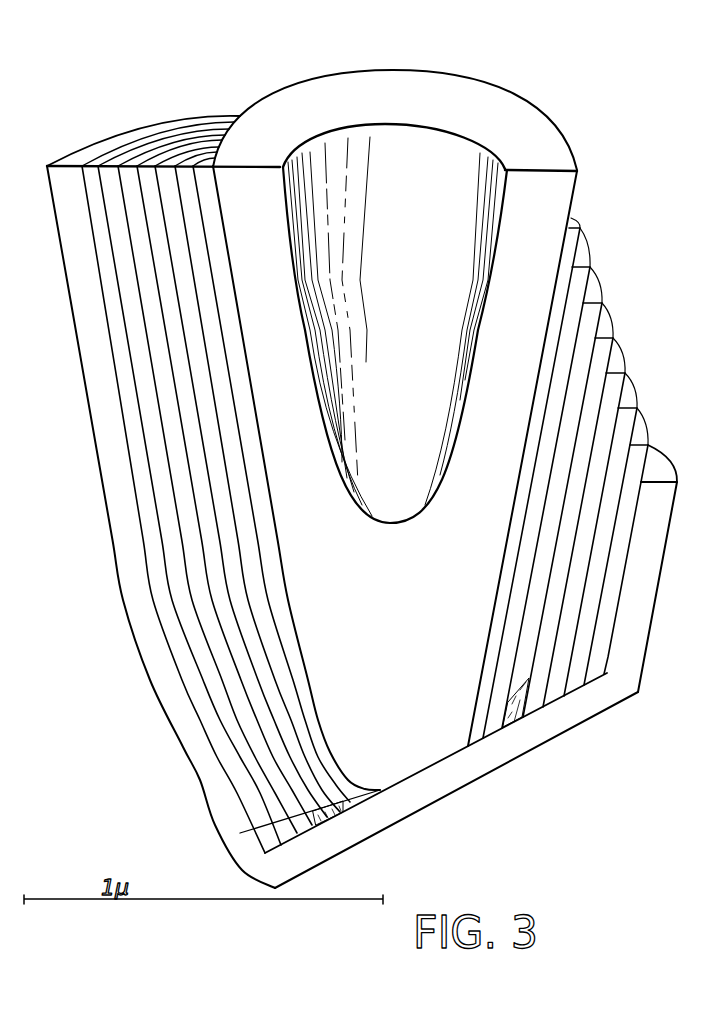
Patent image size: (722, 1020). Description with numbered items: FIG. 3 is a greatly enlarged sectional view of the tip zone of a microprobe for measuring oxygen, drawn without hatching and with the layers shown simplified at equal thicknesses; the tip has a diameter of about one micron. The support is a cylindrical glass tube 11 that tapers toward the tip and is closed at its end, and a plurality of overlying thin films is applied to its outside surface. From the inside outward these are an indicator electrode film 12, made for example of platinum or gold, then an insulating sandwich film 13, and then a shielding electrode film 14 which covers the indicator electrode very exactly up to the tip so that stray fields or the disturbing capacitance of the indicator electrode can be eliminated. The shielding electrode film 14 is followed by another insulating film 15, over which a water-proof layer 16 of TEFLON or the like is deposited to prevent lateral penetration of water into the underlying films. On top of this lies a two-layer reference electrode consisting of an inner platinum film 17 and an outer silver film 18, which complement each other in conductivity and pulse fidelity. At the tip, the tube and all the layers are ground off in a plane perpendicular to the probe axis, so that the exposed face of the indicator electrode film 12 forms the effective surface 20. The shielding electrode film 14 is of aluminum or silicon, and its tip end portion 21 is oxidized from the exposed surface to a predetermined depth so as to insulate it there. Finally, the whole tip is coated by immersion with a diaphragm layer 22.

The glass tube 11 is at (262, 407).
The indicator electrode film 12 is at (465, 737).
The insulating sandwich film 13 is at (488, 727).
The shielding electrode film 14 is at (542, 673).
The insulating film 15 is at (558, 677).
The water-proof layer 16 is at (578, 670).
The platinum film 17 is at (592, 670).
The silver film 18 is at (603, 657).
The effective surface 20 is at (373, 793).
The tip end portion 21 is at (245, 833).
The diaphragm layer 22 is at (432, 790).